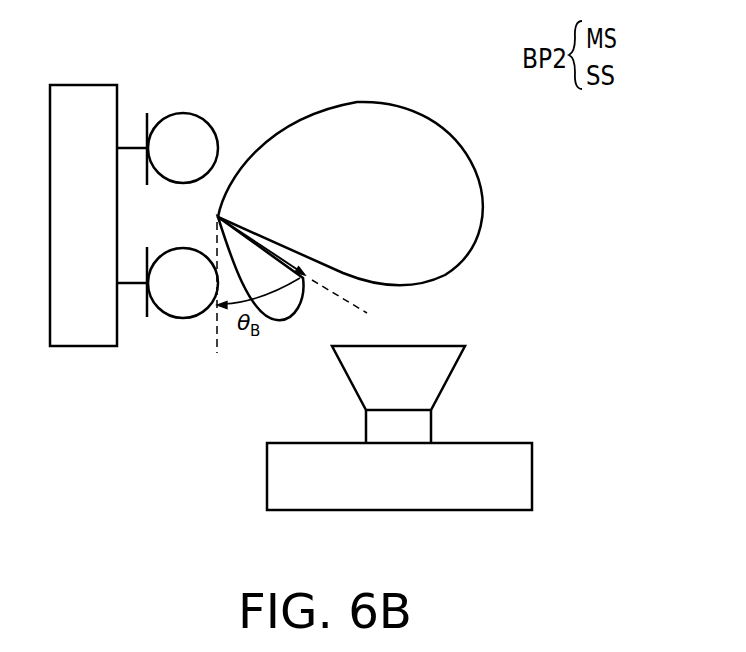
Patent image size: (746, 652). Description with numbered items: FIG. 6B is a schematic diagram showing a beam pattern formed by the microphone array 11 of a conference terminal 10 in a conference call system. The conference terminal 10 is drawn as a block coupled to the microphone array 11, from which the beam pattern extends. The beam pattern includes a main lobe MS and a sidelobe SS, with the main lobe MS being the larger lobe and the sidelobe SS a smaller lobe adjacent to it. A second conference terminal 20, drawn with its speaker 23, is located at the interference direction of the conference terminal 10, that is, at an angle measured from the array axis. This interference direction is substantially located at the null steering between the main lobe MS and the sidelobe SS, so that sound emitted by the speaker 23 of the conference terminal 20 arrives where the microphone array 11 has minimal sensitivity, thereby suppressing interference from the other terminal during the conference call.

The conference terminal 10 is at (85, 85).
The microphone array 11 is at (182, 250).
The conference terminal 20 is at (532, 483).
The speaker 23 is at (437, 382).
The main lobe MS is at (373, 102).
The sidelobe SS is at (288, 313).